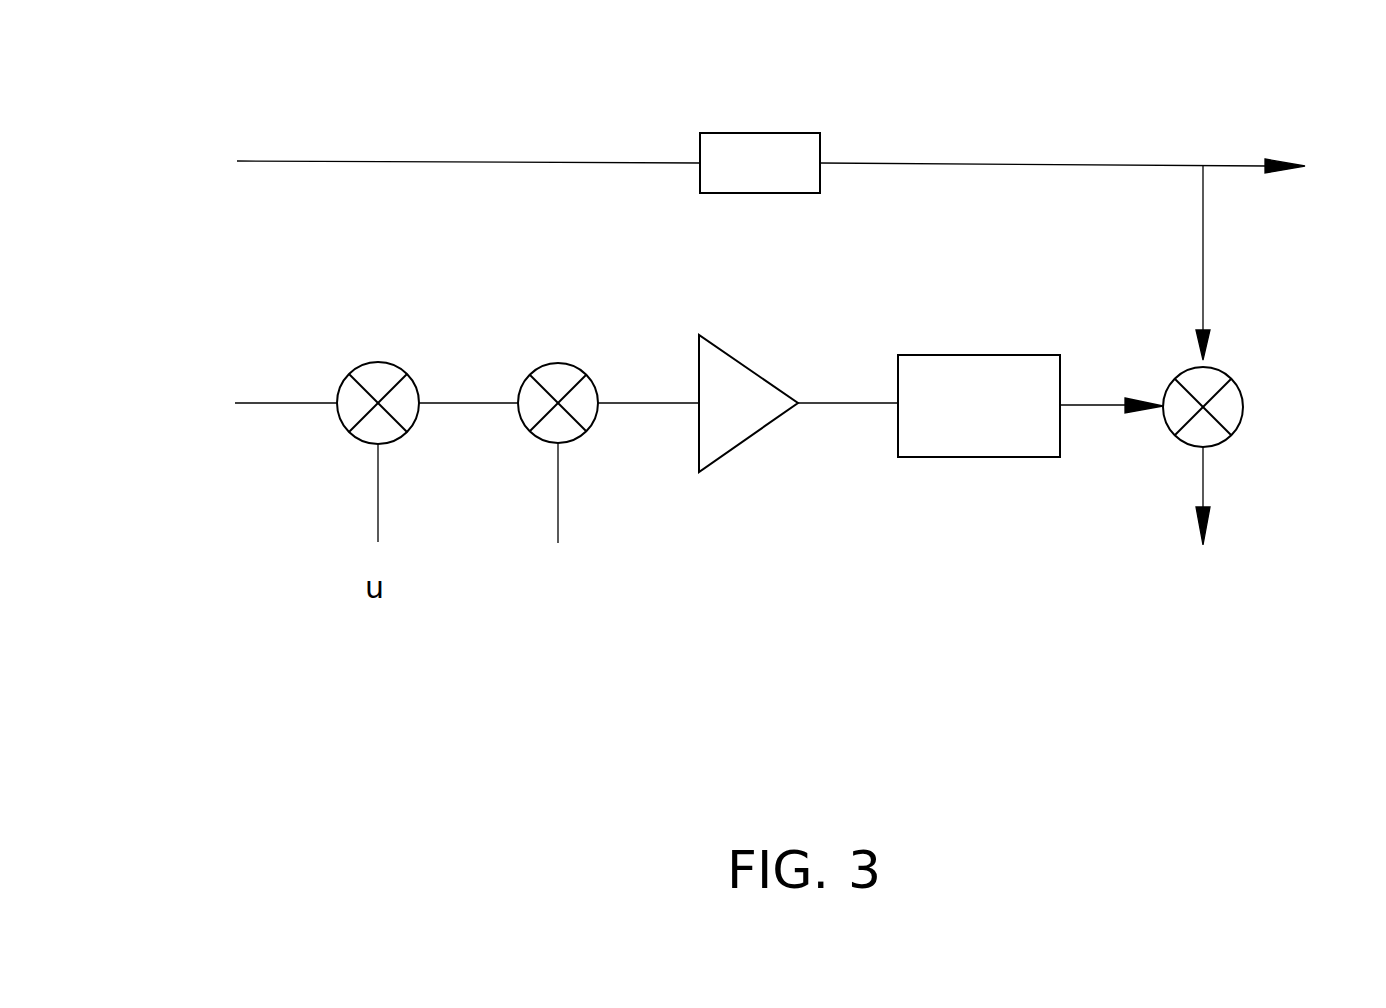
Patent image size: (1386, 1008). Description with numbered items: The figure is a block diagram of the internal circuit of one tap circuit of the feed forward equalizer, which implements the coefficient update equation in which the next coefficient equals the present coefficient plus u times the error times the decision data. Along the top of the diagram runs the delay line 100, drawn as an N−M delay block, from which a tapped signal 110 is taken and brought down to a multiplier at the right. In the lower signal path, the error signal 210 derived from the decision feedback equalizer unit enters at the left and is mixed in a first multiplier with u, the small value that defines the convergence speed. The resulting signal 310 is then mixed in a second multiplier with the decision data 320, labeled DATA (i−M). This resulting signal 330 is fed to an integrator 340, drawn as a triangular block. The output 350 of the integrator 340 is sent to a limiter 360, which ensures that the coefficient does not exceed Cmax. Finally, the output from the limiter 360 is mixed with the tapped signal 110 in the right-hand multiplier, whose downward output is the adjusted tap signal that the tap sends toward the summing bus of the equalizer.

The delay line 100 is at (777, 133).
The tap 110 is at (1203, 237).
The error signal 210 is at (288, 403).
The resulting signal 310 is at (460, 403).
The decision data 320 is at (558, 485).
The resulting signal 330 is at (642, 403).
The integrator 340 is at (745, 443).
The output of the integrator 350 is at (842, 403).
The limiter 360 is at (957, 355).